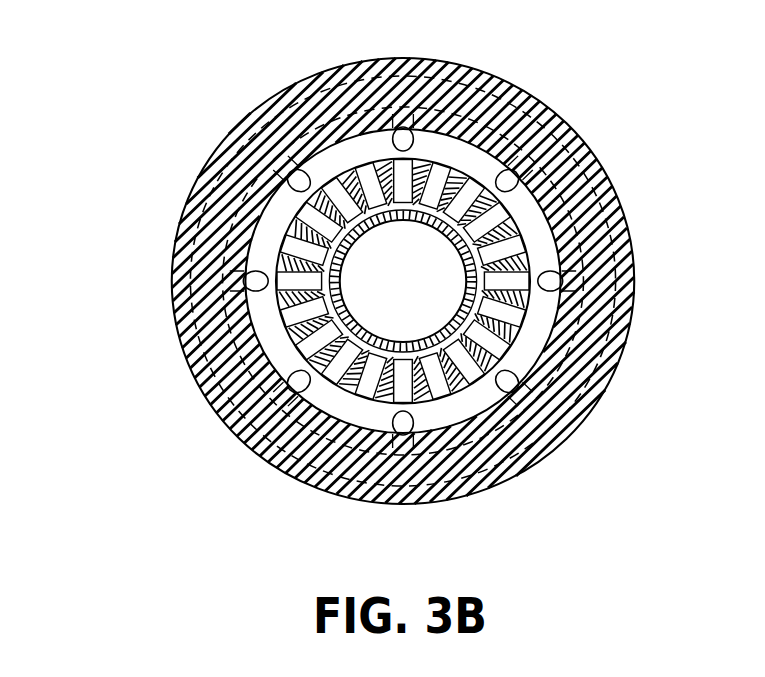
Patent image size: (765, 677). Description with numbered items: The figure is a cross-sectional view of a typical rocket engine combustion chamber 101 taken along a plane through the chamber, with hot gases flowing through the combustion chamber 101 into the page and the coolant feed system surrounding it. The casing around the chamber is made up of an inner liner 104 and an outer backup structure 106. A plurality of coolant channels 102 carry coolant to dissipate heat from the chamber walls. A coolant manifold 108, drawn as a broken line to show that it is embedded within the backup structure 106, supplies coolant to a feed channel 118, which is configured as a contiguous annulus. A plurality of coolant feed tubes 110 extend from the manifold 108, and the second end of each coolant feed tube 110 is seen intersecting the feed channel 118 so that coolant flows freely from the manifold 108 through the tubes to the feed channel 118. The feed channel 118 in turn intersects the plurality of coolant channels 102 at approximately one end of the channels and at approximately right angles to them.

The combustion chamber 101 is at (427, 295).
The coolant channels 102 is at (485, 328).
The liner 104 is at (478, 368).
The backup structure 106 is at (568, 433).
The coolant manifold 108 is at (592, 387).
The coolant feed tubes 110 is at (262, 288).
The feed channel 118 is at (538, 241).